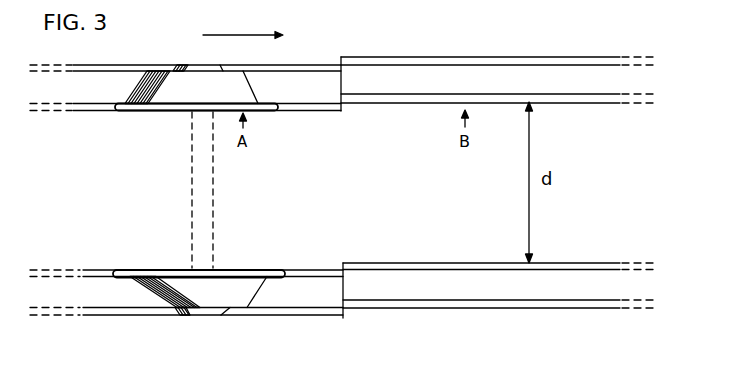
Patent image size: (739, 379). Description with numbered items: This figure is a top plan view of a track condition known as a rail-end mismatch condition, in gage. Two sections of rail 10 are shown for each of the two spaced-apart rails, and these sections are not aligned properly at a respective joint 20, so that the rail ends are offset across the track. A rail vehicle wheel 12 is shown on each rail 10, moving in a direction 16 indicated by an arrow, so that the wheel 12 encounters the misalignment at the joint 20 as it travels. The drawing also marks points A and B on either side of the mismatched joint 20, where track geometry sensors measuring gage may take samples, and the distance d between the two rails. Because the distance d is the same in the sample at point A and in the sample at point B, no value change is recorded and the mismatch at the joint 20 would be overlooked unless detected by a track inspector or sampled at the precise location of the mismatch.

The rail 10 is at (91, 87).
The rail car wheel 12 is at (170, 90).
The direction 16 is at (258, 37).
The joint 20 is at (356, 251).